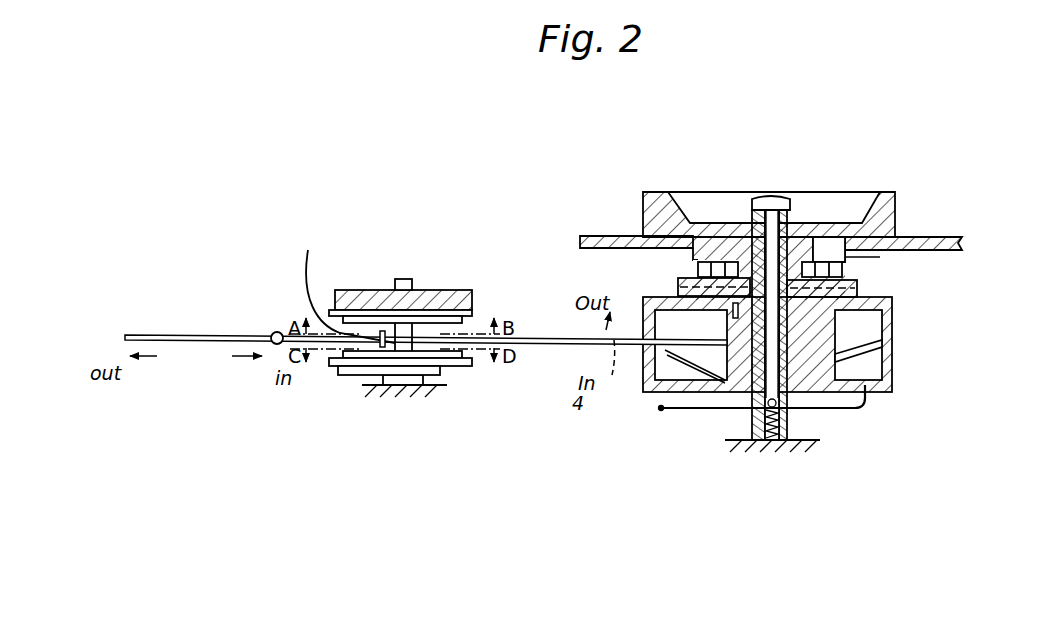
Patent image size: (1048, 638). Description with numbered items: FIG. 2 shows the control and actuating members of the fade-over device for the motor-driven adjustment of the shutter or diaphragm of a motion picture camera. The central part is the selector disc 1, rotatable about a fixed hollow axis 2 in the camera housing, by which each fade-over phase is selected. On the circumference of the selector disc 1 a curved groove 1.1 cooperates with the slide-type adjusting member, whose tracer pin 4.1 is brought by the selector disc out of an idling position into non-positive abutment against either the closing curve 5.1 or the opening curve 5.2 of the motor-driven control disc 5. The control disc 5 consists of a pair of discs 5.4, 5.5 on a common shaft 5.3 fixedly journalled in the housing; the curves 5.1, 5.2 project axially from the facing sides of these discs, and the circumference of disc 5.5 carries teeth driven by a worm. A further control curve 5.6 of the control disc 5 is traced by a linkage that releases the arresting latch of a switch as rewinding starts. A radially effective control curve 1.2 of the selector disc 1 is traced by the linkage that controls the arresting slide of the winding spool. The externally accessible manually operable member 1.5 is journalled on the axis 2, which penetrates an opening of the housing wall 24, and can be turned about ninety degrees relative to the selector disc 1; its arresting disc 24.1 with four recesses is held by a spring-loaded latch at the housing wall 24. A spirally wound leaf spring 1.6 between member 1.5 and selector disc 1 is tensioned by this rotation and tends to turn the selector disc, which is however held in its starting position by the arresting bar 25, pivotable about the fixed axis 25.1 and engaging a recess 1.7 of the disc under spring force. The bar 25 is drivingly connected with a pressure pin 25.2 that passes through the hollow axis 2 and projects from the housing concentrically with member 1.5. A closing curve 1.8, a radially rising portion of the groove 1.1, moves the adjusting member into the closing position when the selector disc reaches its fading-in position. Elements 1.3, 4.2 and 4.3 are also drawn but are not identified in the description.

The selector disc 1 is at (952, 345).
The curved groove 1.1 is at (888, 345).
The radially effective control curve 1.2 is at (678, 284).
The right plate 1.3 is at (850, 290).
The manually operable member 1.5 is at (895, 206).
The spirally wound leaf spring 1.6 is at (698, 268).
The recess 1.7 is at (880, 392).
The closing curve 1.8 is at (838, 329).
The fixed axis 2 is at (783, 452).
The tracer pin 4.1 is at (347, 284).
The pivot 4.2 is at (274, 332).
The needle 4.3 is at (197, 334).
The control disc 5 is at (382, 287).
The closing curve 5.1 is at (462, 320).
The opening curve 5.2 is at (447, 372).
The common shaft 5.3 is at (412, 288).
The disc 5.4 is at (455, 365).
The disc 5.5 is at (472, 314).
The control curve 5.6 is at (343, 376).
The housing wall 24 is at (950, 240).
The arresting disc 24.1 is at (880, 257).
The arresting bar 25 is at (838, 412).
The fixed axis 25.1 is at (661, 410).
The pressure pin 25.2 is at (776, 198).